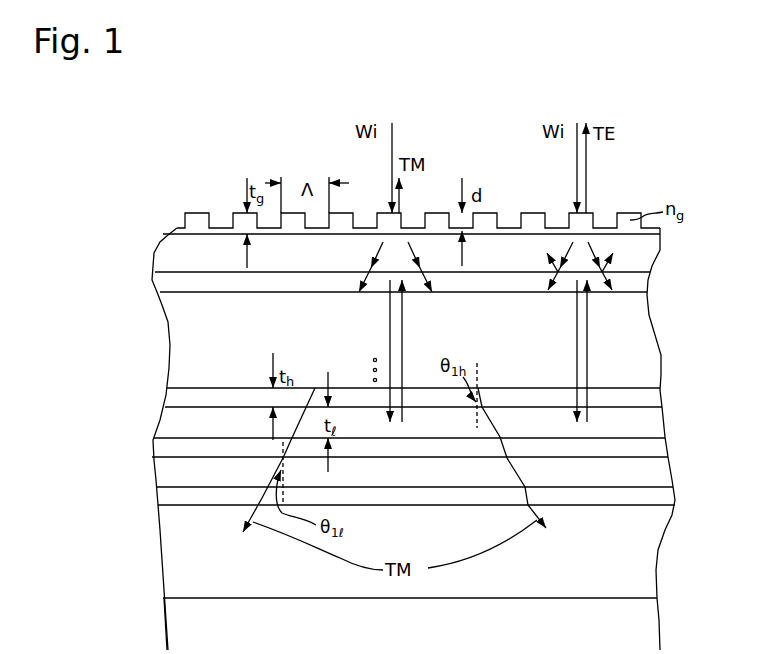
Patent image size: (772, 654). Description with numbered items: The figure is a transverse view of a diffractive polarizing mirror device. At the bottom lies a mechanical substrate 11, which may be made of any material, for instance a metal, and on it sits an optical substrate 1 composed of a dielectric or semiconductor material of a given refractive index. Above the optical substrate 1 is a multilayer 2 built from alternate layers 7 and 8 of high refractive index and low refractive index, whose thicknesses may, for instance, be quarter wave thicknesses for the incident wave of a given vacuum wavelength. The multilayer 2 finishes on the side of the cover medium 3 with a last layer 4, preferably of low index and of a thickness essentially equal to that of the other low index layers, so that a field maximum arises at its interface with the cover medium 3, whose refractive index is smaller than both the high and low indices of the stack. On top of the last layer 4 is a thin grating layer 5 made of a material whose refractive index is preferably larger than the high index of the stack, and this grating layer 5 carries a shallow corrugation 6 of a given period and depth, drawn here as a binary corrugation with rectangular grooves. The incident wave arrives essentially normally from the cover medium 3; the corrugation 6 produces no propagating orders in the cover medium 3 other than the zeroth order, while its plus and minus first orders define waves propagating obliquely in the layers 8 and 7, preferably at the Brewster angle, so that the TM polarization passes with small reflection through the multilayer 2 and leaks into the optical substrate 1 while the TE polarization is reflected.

The optical substrate 1 is at (650, 535).
The multilayer 2 is at (670, 337).
The cover medium 3 is at (630, 185).
The last layer 4 is at (665, 250).
The grating layer 5 is at (192, 222).
The corrugation 6 is at (233, 216).
The high refractive index layer 7 is at (647, 448).
The low refractive index layer 8 is at (640, 422).
The mechanical substrate 11 is at (637, 620).